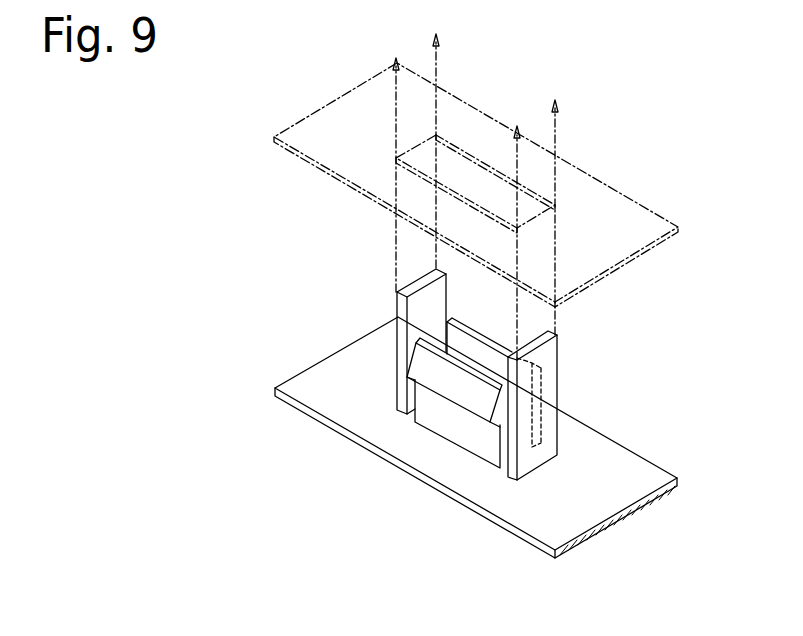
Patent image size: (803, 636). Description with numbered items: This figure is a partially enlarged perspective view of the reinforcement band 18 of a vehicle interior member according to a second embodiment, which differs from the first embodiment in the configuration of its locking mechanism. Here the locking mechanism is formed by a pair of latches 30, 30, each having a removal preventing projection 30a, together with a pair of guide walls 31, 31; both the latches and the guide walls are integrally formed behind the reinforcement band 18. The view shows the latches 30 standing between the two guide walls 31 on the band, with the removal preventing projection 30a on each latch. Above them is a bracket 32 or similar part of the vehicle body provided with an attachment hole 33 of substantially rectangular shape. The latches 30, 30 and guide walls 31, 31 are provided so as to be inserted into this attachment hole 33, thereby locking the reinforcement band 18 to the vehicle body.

The reinforcement band 18 is at (633, 482).
The latch 30 is at (477, 442).
The removal preventing projection 30a is at (455, 392).
The guide wall 31 is at (398, 310).
The bracket 32 is at (627, 215).
The attachment hole 33 is at (470, 150).